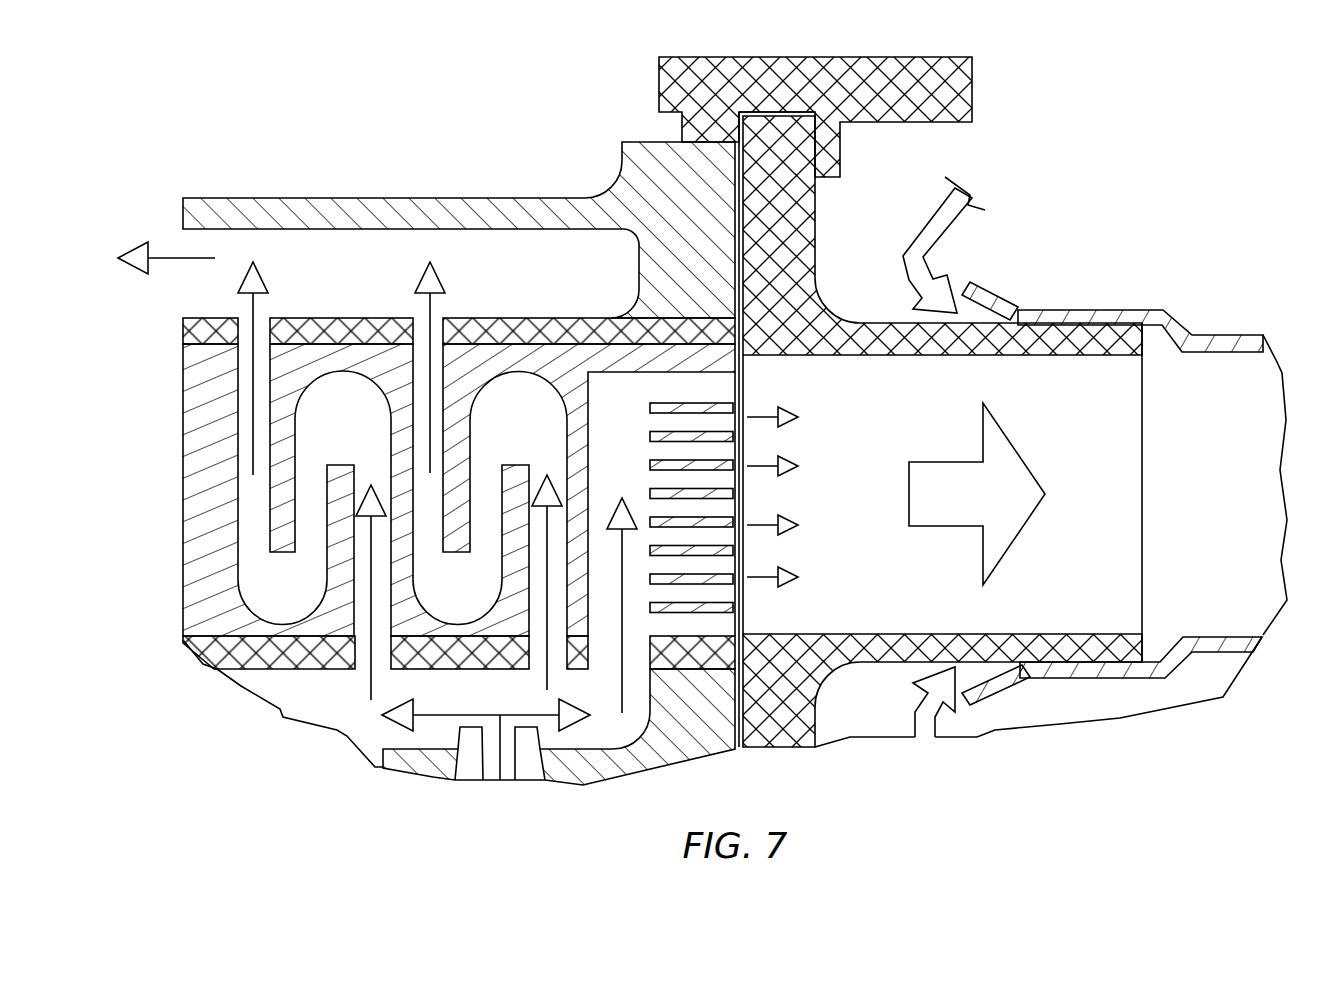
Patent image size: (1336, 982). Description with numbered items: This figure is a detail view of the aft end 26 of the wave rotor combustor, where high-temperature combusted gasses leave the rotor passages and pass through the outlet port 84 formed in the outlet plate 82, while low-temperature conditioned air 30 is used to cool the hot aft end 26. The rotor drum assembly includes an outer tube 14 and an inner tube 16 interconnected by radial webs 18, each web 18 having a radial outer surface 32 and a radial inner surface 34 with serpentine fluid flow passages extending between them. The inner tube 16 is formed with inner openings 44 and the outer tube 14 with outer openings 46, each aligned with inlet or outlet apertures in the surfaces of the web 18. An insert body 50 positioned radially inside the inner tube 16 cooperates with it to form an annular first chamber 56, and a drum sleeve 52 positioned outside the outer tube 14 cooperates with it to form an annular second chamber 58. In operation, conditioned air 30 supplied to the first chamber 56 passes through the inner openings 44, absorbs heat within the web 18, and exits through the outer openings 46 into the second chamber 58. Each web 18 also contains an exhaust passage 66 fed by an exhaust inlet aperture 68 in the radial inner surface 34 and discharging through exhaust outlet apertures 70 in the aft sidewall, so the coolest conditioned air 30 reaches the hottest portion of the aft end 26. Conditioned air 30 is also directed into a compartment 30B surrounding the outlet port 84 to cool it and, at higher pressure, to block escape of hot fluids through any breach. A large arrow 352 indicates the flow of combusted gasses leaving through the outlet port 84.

The outer tube 14 is at (530, 318).
The inner tube 16 is at (285, 655).
The web 18 is at (205, 492).
The aft end 26 is at (621, 106).
The conditioned air 30 is at (170, 257).
The compartment 30B is at (1072, 703).
The radial outer surface 32 is at (205, 330).
The radial inner surface 34 is at (213, 640).
The inner openings 44 is at (363, 655).
The outer openings 46 is at (440, 318).
The insert body 50 is at (578, 772).
The drum sleeve 52 is at (278, 197).
The first chamber 56 is at (297, 705).
The second chamber 58 is at (327, 257).
The exhaust passage 66 is at (626, 403).
The exhaust inlet aperture 68 is at (636, 659).
The exhaust outlet apertures 70 is at (744, 393).
The outlet plate 82 is at (802, 196).
The outlet port 84 is at (852, 539).
The exhaust flow arrow 352 is at (922, 462).